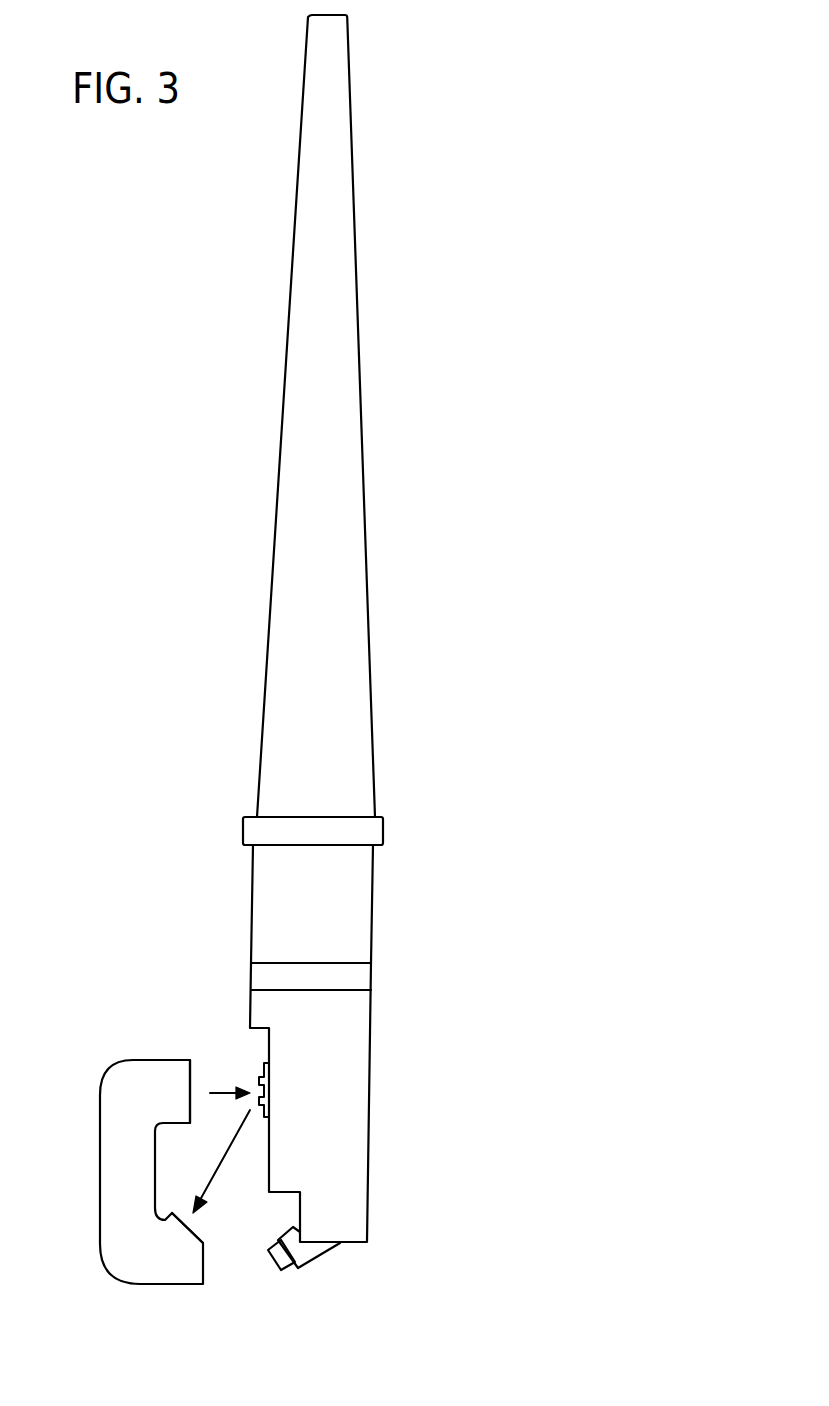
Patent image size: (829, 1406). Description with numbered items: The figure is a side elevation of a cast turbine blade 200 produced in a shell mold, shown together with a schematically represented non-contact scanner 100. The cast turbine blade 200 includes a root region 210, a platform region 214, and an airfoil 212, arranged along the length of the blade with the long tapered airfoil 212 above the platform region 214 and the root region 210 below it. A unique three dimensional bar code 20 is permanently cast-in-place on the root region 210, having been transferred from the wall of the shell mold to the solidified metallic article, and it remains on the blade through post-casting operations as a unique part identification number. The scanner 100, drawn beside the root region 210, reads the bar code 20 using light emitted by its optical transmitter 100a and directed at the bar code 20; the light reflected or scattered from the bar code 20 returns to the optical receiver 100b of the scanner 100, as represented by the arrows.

The cast turbine blade 200 is at (310, 642).
The airfoil 212 is at (348, 599).
The platform region 214 is at (360, 890).
The root region 210 is at (353, 1089).
The bar code 20 is at (250, 1077).
The scanner 100 is at (140, 1073).
The optical transmitter 100a is at (195, 1088).
The optical receiver 100b is at (193, 1230).